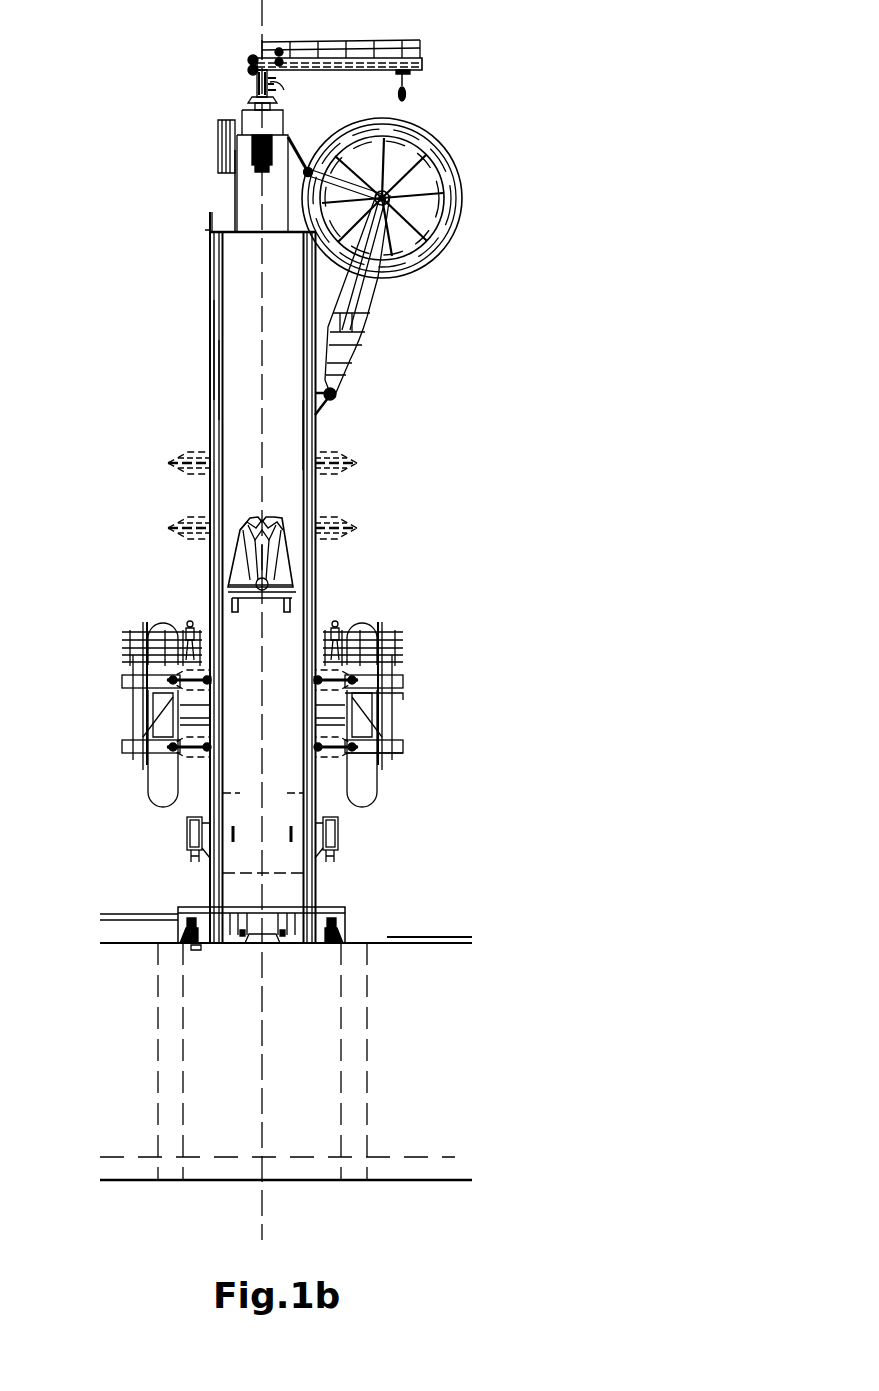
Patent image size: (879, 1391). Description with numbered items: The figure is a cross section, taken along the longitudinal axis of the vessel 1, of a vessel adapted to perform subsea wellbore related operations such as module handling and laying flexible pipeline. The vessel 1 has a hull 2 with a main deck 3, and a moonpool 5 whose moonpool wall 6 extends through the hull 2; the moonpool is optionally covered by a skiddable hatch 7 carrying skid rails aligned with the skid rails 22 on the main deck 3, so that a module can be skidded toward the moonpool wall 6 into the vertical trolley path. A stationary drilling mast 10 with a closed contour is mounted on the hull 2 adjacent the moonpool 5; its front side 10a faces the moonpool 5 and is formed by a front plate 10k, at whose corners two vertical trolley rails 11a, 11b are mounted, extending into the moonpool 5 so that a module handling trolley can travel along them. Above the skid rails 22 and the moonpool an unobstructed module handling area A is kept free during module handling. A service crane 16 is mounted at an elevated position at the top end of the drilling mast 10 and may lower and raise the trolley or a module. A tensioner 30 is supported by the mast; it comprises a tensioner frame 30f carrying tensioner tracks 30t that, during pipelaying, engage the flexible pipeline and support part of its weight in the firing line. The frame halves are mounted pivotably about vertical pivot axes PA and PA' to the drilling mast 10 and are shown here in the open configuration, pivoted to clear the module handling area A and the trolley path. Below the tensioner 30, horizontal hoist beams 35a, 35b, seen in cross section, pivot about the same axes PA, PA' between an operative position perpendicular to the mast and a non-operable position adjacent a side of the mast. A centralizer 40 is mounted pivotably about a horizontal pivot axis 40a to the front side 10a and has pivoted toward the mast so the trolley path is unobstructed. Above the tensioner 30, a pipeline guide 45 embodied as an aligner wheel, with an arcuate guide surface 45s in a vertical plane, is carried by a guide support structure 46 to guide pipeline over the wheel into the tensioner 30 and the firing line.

The vessel 1 is at (478, 870).
The hull 2 is at (286, 1115).
The main deck 3 is at (452, 939).
The moonpool 5 is at (262, 1061).
The moonpool wall 6 is at (183, 1064).
The skiddable hatch 7 is at (320, 922).
The drilling mast 10 is at (192, 262).
The front side of the drilling mast 10a is at (239, 587).
The front plate 10k is at (283, 438).
The first vertical trolley rail 11a is at (210, 384).
The second vertical trolley rail 11b is at (313, 370).
The service crane 16 is at (378, 42).
The skid rails 22 is at (118, 913).
The tensioner 30 is at (425, 681).
The tensioner tracks 30t is at (345, 716).
The tensioner frame 30f is at (352, 762).
The first horizontal hoist beam 35a is at (187, 833).
The second horizontal hoist beam 35b is at (338, 833).
The centralizer 40 is at (282, 570).
The horizontal pivot axis of the centralizer 40a is at (297, 600).
The pipeline guide 45 is at (470, 190).
The arcuate guide surface 45s is at (455, 160).
The guide support structure 46 is at (370, 298).
The module handling area A is at (150, 907).
The vertical pivot axis PA is at (231, 661).
The second vertical pivot axis PA' is at (290, 661).